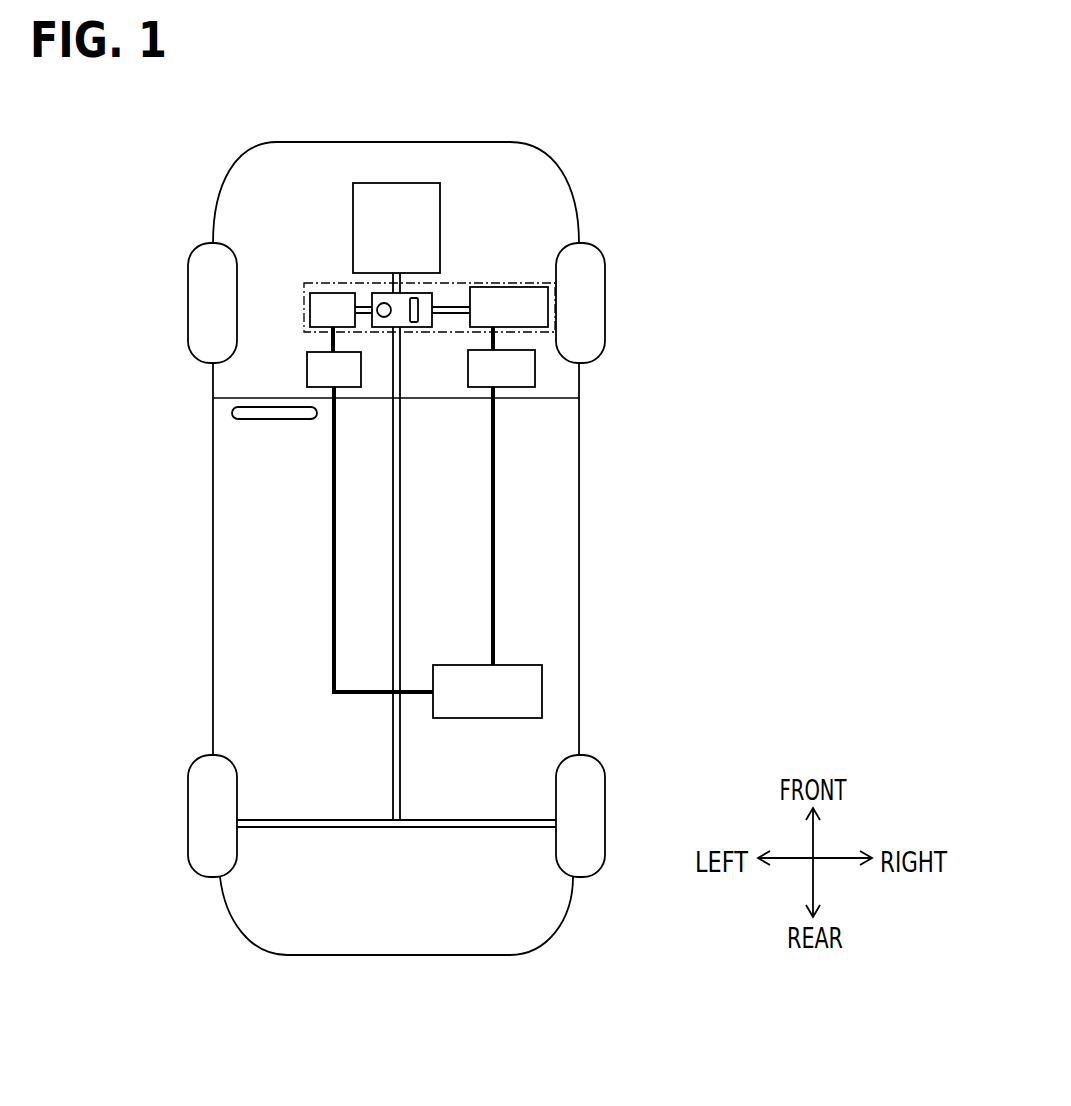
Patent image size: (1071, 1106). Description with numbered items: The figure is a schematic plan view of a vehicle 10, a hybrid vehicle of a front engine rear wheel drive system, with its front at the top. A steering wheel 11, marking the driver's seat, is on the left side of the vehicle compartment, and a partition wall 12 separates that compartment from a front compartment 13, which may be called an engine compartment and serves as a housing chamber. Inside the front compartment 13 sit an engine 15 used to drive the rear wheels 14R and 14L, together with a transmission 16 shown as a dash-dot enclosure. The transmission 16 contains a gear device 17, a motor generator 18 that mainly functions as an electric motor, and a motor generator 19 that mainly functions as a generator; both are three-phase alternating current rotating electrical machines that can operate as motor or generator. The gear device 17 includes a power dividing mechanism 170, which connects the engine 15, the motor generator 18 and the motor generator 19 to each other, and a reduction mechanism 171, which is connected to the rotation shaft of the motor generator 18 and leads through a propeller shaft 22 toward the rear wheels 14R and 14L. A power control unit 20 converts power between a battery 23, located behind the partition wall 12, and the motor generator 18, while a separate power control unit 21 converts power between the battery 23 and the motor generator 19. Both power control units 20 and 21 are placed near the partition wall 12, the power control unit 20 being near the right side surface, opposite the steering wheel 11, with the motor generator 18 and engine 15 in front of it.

The vehicle 10 is at (569, 159).
The steering wheel 11 is at (270, 420).
The partition wall 12 is at (237, 398).
The front compartment 13 is at (262, 193).
The rear wheel 14L is at (188, 820).
The rear wheel 14R is at (605, 817).
The engine 15 is at (403, 183).
The transmission 16 is at (527, 280).
The gear device 17 is at (432, 295).
The motor generator 18 is at (490, 287).
The motor generator 19 is at (377, 303).
The power control unit 20 is at (535, 370).
The power control unit 21 is at (307, 368).
The propeller shaft 22 is at (402, 547).
The battery 23 is at (542, 688).
The power dividing mechanism 170 is at (320, 290).
The reduction mechanism 171 is at (415, 330).